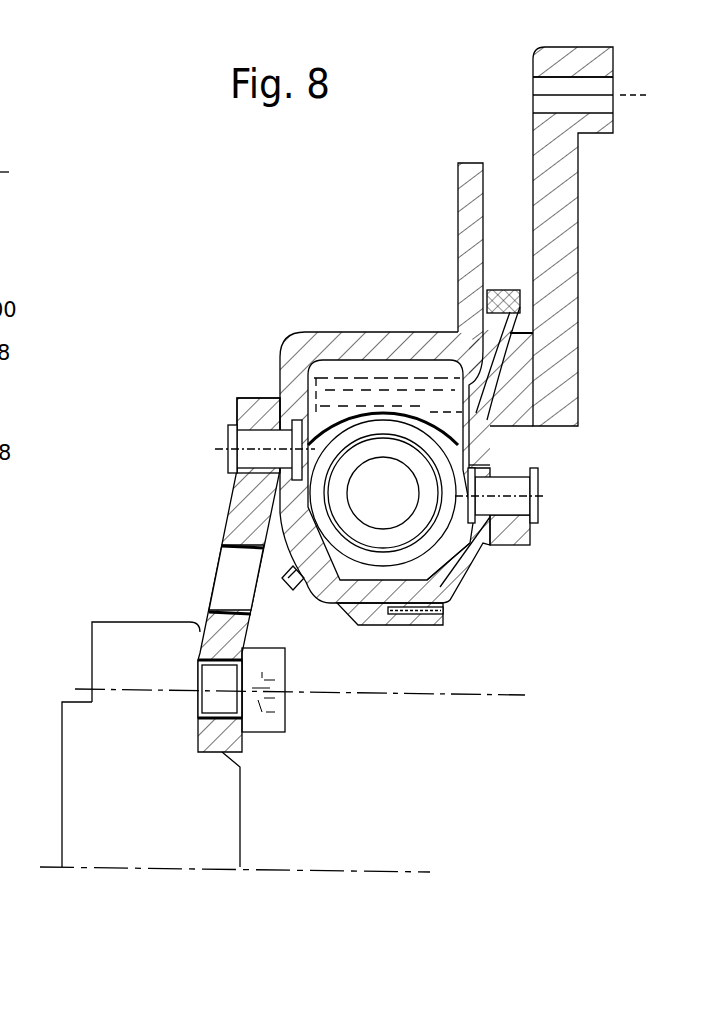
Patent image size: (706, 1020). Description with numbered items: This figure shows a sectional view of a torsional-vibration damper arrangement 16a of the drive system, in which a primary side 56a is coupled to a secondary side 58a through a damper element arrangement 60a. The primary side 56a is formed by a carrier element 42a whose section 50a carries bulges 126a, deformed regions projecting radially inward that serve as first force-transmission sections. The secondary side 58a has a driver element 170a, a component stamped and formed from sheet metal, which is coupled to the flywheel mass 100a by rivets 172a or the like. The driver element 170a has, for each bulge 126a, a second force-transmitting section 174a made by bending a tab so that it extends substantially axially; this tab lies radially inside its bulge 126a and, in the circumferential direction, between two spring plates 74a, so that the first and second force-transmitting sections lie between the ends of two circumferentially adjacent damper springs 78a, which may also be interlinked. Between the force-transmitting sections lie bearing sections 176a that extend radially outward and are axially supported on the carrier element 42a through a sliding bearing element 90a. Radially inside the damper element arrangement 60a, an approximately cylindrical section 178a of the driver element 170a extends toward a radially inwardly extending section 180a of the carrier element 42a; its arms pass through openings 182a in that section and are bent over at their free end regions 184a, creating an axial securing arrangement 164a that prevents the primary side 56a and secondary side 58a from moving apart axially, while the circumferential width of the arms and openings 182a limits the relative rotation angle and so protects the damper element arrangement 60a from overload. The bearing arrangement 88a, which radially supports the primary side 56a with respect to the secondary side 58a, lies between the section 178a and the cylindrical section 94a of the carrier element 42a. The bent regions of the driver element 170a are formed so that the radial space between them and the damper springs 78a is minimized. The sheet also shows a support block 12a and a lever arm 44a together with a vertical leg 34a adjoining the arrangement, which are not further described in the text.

The support block 12a is at (76, 805).
The torsional-vibration damper arrangement 16a is at (426, 251).
The vertical leg of holder 34a is at (460, 198).
The carrier element 42a is at (275, 495).
The lever arm 44a is at (240, 551).
The section 50a is at (326, 340).
The primary side 56a is at (267, 322).
The secondary side 58a is at (588, 366).
The damper element arrangement 60a is at (403, 612).
The spring plates 74a is at (318, 398).
The damper springs 78a is at (424, 546).
The bearing arrangement 88a is at (395, 572).
The sliding bearing element 90a is at (535, 262).
The cylindrical section 94a is at (444, 622).
The flywheel mass 100a is at (578, 272).
The bulges 126a is at (398, 376).
The axial securing arrangement 164a is at (293, 607).
The driver element 170a is at (472, 560).
The rivets 172a is at (518, 484).
The second force-transmitting section 174a is at (476, 406).
The bearing section 176a is at (512, 336).
The axially extending section 178a is at (368, 598).
The radially inwardly extending section 180a is at (283, 583).
The openings 182a is at (347, 612).
The free end regions 184a is at (260, 548).